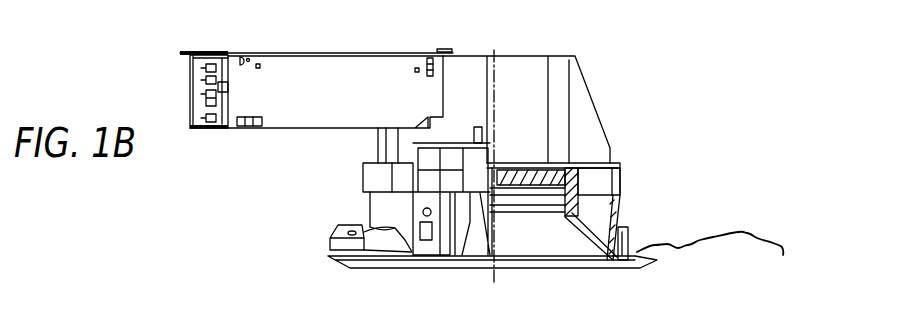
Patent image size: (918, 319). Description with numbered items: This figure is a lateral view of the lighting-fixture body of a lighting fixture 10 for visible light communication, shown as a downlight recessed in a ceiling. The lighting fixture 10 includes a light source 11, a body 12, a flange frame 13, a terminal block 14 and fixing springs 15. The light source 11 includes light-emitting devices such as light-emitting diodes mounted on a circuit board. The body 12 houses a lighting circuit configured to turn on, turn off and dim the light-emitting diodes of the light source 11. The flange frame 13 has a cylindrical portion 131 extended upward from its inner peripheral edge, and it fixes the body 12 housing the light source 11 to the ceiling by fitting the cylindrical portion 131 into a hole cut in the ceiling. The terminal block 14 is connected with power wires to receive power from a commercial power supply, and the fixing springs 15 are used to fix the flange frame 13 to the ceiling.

The lighting fixture 10 is at (169, 29).
The light source 11 is at (520, 203).
The body 12 is at (593, 118).
The flange frame 13 is at (397, 265).
The cylindrical portion 131 is at (631, 234).
The terminal block 14 is at (331, 53).
The fixing springs 15 is at (741, 233).